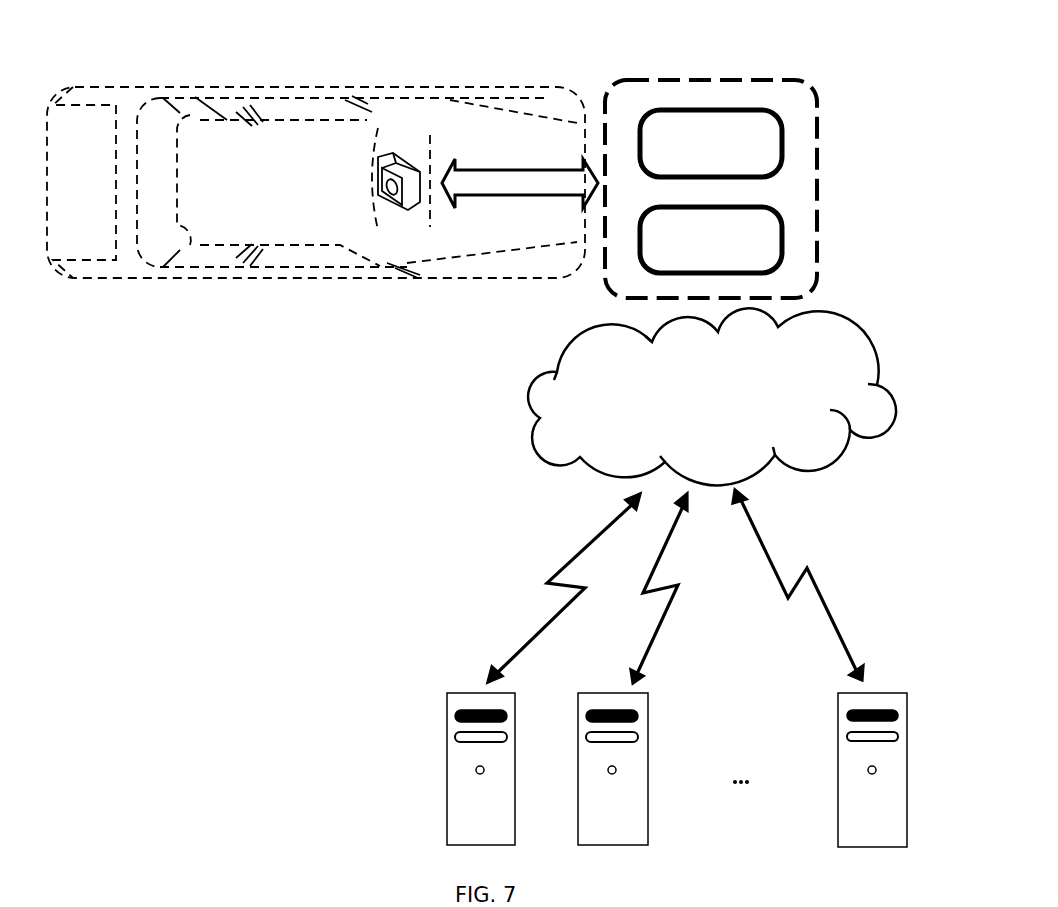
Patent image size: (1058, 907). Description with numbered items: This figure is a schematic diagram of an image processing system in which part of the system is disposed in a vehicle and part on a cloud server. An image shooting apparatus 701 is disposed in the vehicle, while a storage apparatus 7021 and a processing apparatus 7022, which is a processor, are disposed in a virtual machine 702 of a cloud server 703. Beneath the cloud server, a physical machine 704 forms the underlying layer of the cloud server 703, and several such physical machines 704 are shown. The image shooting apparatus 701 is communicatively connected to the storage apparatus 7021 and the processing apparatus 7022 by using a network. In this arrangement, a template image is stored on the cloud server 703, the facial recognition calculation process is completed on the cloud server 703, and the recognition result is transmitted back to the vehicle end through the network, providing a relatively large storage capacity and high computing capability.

The image shooting apparatus 701 is at (405, 162).
The virtual machine 702 is at (748, 79).
The storage apparatus 7021 is at (782, 142).
The processing apparatus 7022 is at (780, 258).
The cloud server 703 is at (878, 350).
The physical machine 704 is at (518, 717).